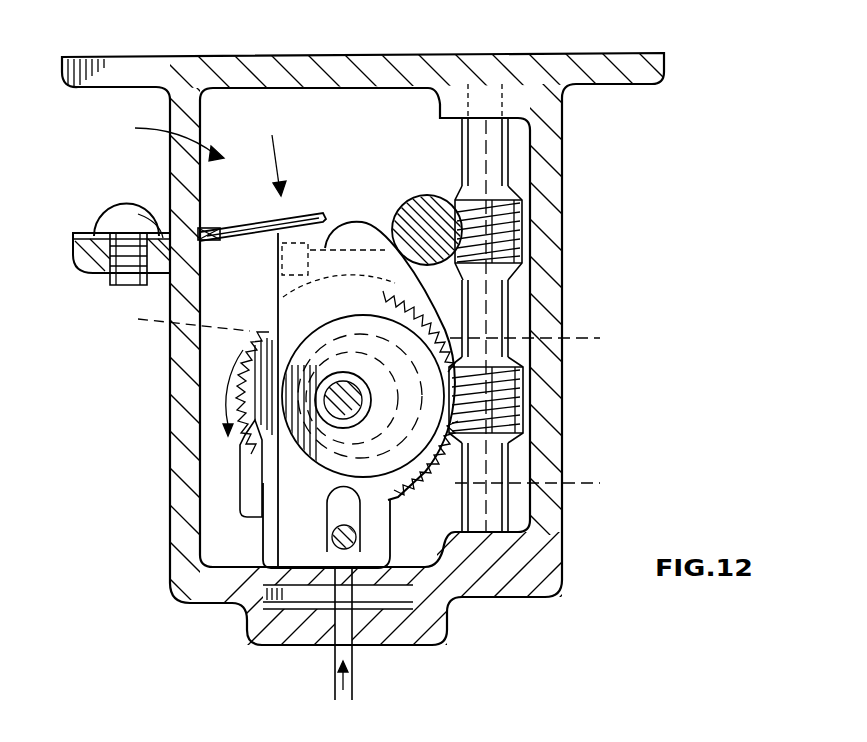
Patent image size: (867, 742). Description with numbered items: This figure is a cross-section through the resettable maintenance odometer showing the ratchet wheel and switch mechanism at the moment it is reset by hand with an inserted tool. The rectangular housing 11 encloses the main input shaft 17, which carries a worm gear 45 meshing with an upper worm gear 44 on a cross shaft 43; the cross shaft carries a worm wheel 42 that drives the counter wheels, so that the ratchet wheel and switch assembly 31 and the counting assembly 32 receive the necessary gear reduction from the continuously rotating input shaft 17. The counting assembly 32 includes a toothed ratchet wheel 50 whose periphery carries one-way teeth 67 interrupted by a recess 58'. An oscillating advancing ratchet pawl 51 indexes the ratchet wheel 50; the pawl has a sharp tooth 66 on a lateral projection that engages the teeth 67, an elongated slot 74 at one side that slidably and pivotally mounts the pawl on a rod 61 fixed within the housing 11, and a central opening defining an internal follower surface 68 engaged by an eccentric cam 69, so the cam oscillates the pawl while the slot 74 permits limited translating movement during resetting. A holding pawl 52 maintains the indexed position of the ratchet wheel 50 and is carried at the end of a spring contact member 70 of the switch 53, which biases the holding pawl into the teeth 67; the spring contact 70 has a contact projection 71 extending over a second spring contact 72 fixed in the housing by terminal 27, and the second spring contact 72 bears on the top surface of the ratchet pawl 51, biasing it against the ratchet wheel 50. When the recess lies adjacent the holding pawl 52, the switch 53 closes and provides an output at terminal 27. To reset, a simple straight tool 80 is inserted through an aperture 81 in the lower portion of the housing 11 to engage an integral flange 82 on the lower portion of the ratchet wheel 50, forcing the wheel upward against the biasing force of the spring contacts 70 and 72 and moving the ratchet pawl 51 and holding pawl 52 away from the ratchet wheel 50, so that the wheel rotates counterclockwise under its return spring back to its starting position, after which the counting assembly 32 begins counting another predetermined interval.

The housing 11 is at (514, 580).
The main input shaft 17 is at (425, 200).
The terminal 27 is at (112, 210).
The ratchet wheel and switch assembly 31 is at (322, 380).
The counting assembly 32 is at (272, 151).
The worm wheel 42 is at (507, 397).
The cross shaft 43 is at (497, 320).
The upper worm gear 44 is at (517, 208).
The worm gear 45 is at (444, 195).
The ratchet wheel 50 is at (238, 452).
The advancing ratchet pawl 51 is at (307, 313).
The holding pawl 52 is at (283, 268).
The switch 53 is at (160, 139).
The reference line 58' is at (175, 320).
The rod 61 is at (295, 535).
The sharp tooth 66 is at (347, 222).
The one-way teeth 67 is at (262, 492).
The internal follower surface 68 is at (543, 335).
The eccentric cam 69 is at (545, 484).
The spring contact member 70 is at (298, 216).
The contact projection 71 is at (318, 214).
The second spring contact 72 is at (262, 226).
The elongated slot 74 is at (360, 521).
The straight tool 80 is at (333, 684).
The aperture 81 is at (350, 648).
The integral flange 82 is at (367, 560).